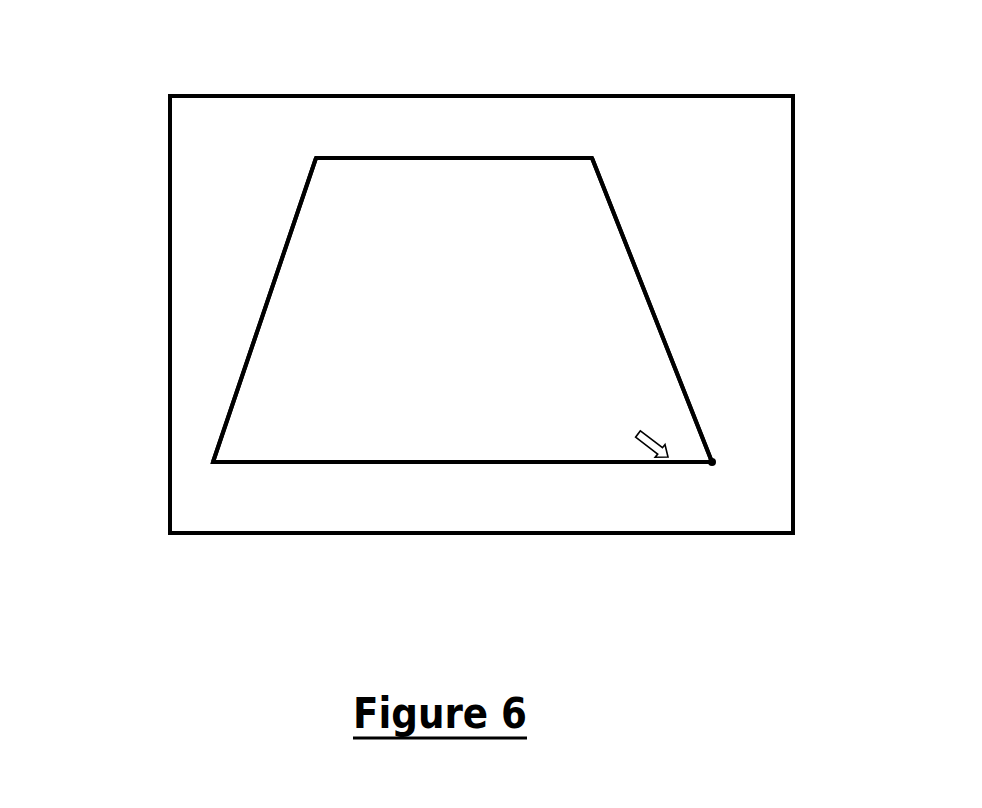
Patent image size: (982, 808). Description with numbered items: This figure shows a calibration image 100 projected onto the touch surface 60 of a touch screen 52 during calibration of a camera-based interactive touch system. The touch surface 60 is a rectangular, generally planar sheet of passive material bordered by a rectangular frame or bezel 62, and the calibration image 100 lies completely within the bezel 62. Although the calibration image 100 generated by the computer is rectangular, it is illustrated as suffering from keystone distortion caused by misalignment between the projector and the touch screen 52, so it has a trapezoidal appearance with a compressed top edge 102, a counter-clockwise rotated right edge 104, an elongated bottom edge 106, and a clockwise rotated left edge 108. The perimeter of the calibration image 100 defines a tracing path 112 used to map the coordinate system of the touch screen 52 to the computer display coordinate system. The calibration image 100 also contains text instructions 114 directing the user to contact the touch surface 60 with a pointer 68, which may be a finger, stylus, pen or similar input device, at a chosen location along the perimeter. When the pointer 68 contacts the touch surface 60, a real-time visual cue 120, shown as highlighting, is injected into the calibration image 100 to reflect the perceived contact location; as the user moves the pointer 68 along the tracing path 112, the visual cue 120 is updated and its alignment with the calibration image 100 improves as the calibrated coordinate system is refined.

The touch screen 52 is at (241, 84).
The touch surface 60 is at (292, 126).
The bezel 62 is at (165, 320).
The pointer 68 is at (665, 460).
The calibration image 100 is at (263, 226).
The compressed top edge 102 is at (447, 158).
The counter-clockwise rotated right edge 104 is at (630, 250).
The elongated bottom edge 106 is at (448, 464).
The clockwise rotated left edge 108 is at (222, 428).
The tracing path 112 is at (326, 464).
The text instructions 114 is at (580, 333).
The visual cue 120 is at (675, 478).